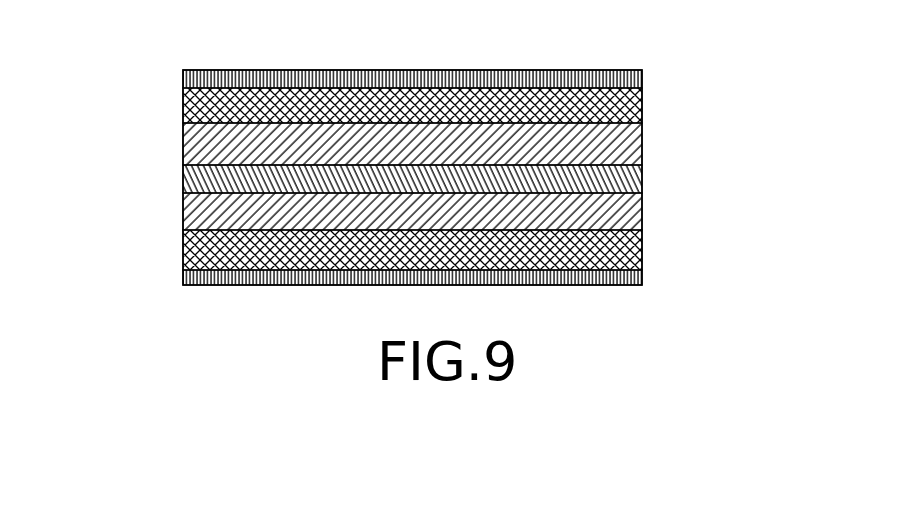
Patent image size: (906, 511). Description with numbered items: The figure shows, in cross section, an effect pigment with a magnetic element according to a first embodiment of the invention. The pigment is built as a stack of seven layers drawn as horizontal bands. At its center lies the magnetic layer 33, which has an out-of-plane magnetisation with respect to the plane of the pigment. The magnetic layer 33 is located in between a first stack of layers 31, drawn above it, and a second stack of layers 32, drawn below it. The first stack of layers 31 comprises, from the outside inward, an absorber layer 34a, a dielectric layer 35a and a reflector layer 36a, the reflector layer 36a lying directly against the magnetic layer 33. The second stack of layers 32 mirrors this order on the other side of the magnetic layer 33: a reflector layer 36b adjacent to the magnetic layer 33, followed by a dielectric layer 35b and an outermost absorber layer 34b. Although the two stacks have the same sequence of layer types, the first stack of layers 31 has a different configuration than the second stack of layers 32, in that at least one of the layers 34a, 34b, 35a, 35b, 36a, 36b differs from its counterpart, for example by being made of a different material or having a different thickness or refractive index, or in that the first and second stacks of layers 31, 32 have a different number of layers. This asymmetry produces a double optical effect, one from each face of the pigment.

The first stack of layers 31 is at (442, 94).
The second stack of layers 32 is at (442, 285).
The magnetic layer 33 is at (183, 178).
The absorber layer 34a is at (642, 80).
The absorber layer 34b is at (642, 278).
The dielectric layer 35a is at (642, 110).
The dielectric layer 35b is at (642, 247).
The reflector layer 36a is at (642, 142).
The reflector layer 36b is at (642, 205).